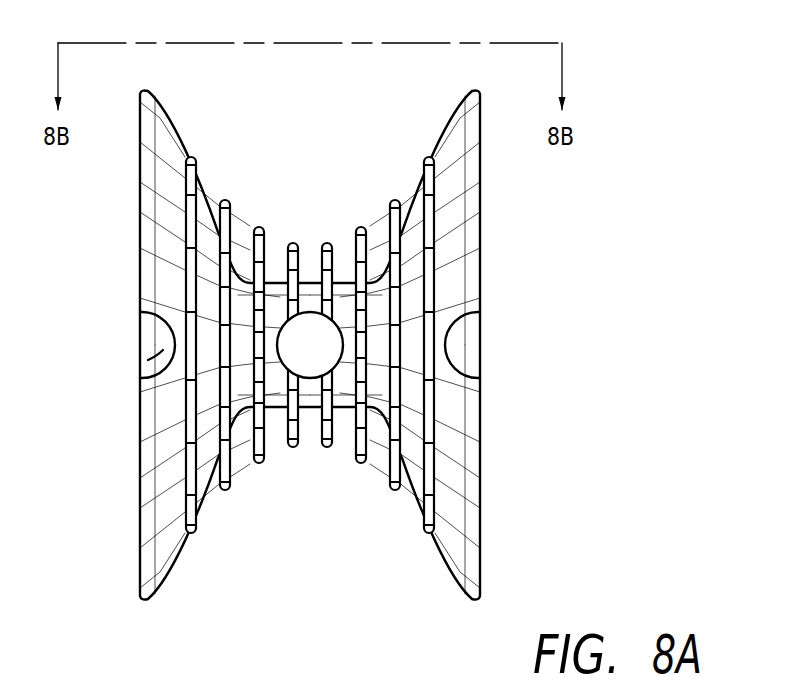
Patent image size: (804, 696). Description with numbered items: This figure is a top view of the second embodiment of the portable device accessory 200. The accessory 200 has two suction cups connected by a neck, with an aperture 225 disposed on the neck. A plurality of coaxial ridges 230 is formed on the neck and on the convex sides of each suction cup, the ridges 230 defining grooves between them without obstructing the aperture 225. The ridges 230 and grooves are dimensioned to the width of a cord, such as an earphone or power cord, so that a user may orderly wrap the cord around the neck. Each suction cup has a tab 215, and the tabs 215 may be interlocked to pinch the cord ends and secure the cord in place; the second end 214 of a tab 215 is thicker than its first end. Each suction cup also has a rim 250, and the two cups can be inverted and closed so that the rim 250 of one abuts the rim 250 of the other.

The portable device accessory 200 is at (256, 393).
The rim 250 is at (140, 562).
The ridge 230 is at (246, 247).
The aperture 225 is at (282, 328).
The tab 215 is at (148, 343).
The second end 214 is at (148, 360).